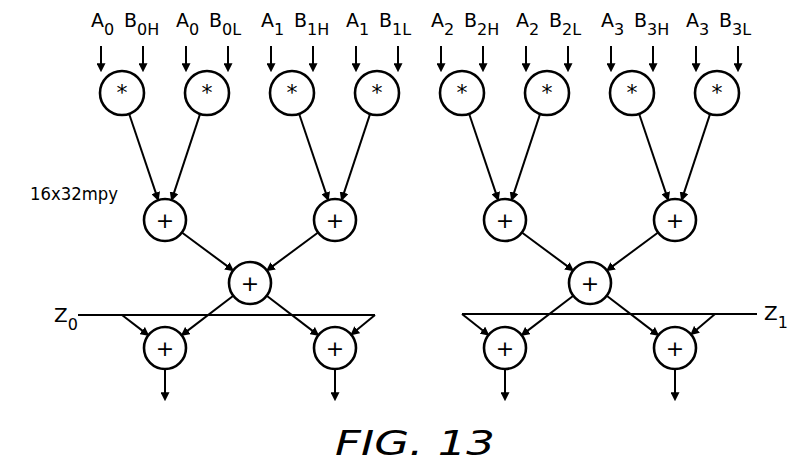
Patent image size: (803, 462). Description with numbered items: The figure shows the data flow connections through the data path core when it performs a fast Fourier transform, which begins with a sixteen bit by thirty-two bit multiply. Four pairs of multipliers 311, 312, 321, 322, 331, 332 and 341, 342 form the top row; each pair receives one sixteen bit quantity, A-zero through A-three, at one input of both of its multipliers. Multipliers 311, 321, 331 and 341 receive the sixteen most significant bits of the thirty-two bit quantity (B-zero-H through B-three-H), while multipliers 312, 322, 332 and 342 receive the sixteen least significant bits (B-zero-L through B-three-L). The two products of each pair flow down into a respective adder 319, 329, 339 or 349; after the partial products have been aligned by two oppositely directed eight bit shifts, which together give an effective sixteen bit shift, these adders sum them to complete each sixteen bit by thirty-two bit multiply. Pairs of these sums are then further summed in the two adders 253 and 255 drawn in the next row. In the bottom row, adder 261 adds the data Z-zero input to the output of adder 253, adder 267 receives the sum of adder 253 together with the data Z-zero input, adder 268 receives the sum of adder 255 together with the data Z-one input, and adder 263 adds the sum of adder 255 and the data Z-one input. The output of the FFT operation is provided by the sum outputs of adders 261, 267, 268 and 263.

The multiplier 311 is at (105, 110).
The multiplier 312 is at (190, 110).
The multiplier 321 is at (275, 110).
The multiplier 322 is at (360, 110).
The multiplier 331 is at (445, 110).
The multiplier 332 is at (530, 110).
The multiplier 341 is at (615, 110).
The multiplier 342 is at (700, 110).
The adder 319 is at (148, 237).
The adder 329 is at (352, 237).
The adder 339 is at (488, 237).
The adder 349 is at (692, 237).
The adder 253 is at (227, 286).
The adder 255 is at (611, 284).
The output adder 261 is at (150, 365).
The output adder 267 is at (352, 365).
The output adder 268 is at (490, 365).
The output adder 263 is at (692, 365).